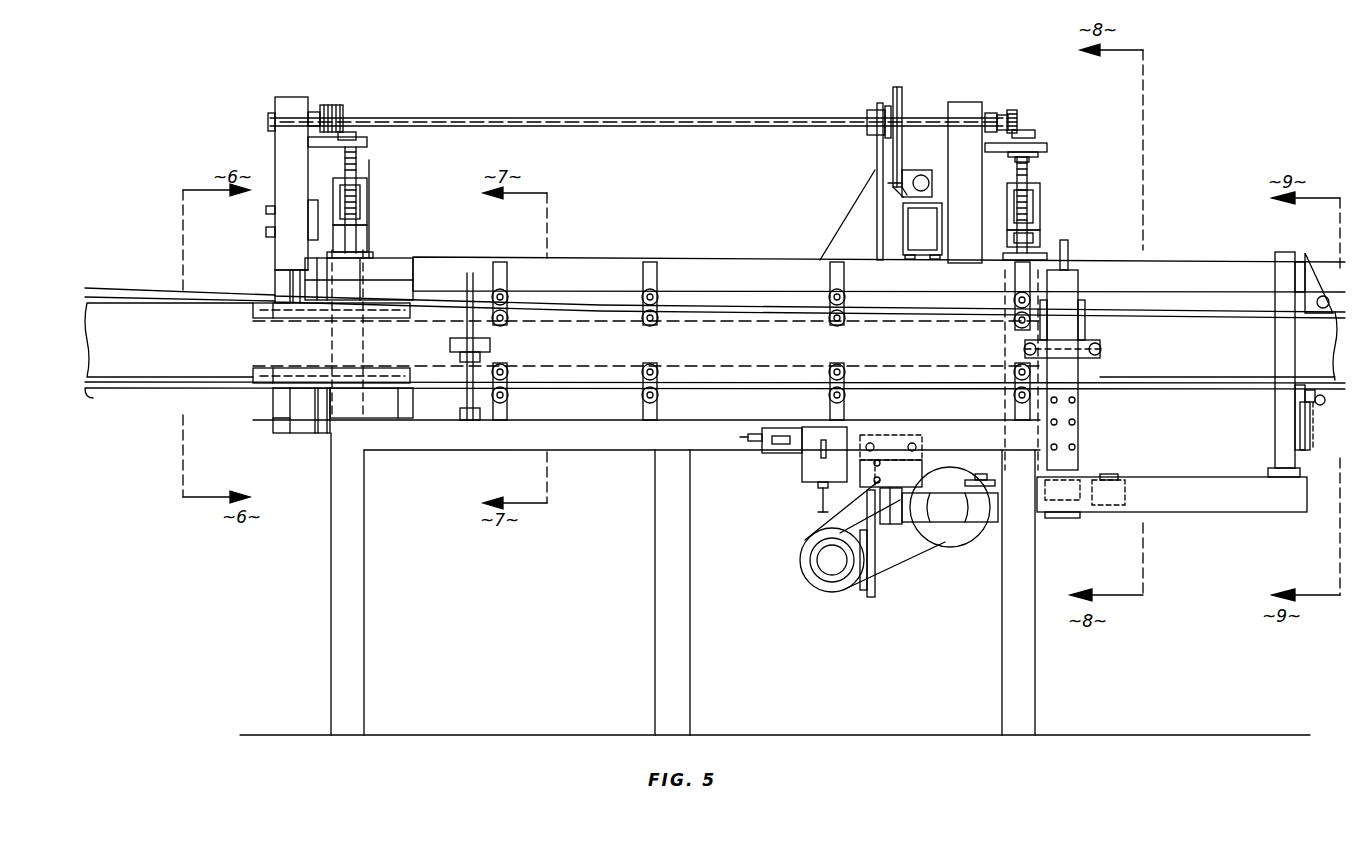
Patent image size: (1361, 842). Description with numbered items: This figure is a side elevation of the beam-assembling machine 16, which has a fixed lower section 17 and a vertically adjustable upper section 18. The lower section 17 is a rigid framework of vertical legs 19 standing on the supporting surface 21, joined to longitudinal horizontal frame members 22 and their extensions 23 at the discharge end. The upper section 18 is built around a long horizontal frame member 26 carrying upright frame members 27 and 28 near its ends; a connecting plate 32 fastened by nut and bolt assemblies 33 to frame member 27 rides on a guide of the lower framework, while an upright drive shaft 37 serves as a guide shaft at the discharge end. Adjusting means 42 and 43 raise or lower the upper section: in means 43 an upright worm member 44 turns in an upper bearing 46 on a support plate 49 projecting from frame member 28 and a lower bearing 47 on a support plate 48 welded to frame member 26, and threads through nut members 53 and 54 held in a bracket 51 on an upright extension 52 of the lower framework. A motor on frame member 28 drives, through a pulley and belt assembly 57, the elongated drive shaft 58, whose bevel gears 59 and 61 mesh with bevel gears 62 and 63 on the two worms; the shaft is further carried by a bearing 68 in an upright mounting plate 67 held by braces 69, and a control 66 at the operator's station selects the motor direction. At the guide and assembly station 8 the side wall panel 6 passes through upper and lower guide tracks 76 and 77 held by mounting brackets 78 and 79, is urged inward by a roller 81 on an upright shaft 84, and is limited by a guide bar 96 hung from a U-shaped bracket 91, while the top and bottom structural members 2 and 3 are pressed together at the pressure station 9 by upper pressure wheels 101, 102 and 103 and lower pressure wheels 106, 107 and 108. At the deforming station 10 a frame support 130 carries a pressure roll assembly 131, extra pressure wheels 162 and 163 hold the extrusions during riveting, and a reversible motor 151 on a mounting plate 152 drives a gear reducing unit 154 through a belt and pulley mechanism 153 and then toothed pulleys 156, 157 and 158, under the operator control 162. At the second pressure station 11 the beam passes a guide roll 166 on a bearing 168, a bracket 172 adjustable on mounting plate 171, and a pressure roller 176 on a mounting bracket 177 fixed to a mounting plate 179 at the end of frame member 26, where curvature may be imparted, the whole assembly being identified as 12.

The top structural member 2 is at (140, 290).
The bottom structural member 3 is at (105, 390).
The side wall panel 6 is at (711, 341).
The guide and assembly station 8 is at (305, 445).
The pressure station 9 is at (668, 255).
The deforming station 10 is at (1140, 250).
The second pressure station 11 is at (1291, 225).
The discharge end post assembly 12 is at (1339, 179).
The machine 16 is at (168, 476).
The lower section 17 is at (331, 530).
The upper section 18 is at (295, 66).
The legs 19 is at (364, 604).
The supporting surface 21 is at (498, 734).
The horizontal frame members 22 is at (600, 450).
The horizontal frame member extensions 23 is at (1172, 477).
The horizontal frame member 26 is at (620, 243).
The vertical frame member 27 is at (300, 97).
The vertical frame member 28 is at (960, 102).
The connecting plate 32 is at (268, 240).
The nut and bolt assemblies 33 is at (266, 210).
The drive shaft 37 is at (1075, 276).
The adjusting means 42 is at (370, 193).
The adjusting means 43 is at (1045, 180).
The worm member 44 is at (1030, 170).
The upper bearing 46 is at (1038, 152).
The lower bearing 47 is at (1068, 248).
The support plate 48 is at (1010, 300).
The support plate 49 is at (1030, 159).
The bracket 51 is at (1040, 212).
The upright extension 52 is at (1003, 250).
The nut member 53 is at (1040, 193).
The nut member 54 is at (1040, 232).
The pulley and belt assembly 57 is at (900, 87).
The drive shaft 58 is at (822, 118).
The bevel gear 59 is at (338, 105).
The bevel gear 61 is at (1005, 115).
The bevel gear 62 is at (358, 134).
The bevel gear 63 is at (1020, 130).
The control 66 is at (782, 453).
The upright mounting plate 67 is at (877, 157).
The bearing 68 is at (880, 106).
The braces 69 is at (842, 222).
The upper guide tracks 76 is at (258, 314).
The lower guide tracks 77 is at (265, 368).
The mounting brackets 78 is at (320, 272).
The mounting brackets 79 is at (325, 410).
The roller 81 is at (492, 345).
The upright supporting shaft 84 is at (466, 330).
The U-shaped bracket 91 is at (604, 322).
The guide bar 96 is at (598, 382).
The pressure wheels 101 is at (507, 275).
The pressure wheels 102 is at (663, 278).
The pressure wheels 103 is at (830, 305).
The pressure wheels 106 is at (510, 380).
The pressure wheels 107 is at (660, 380).
The pressure wheels 108 is at (845, 372).
The upright frame support 130 is at (1085, 366).
The pressure roll assembly 131 is at (1095, 342).
The electric motor 151 is at (815, 578).
The mounting plate 152 is at (868, 598).
The belt and pulley mechanism 153 is at (935, 546).
The gear reducing unit 154 is at (985, 525).
The toothed pulley 156 is at (975, 480).
The toothed pulley 157 is at (1065, 500).
The toothed pulley 158 is at (1112, 474).
The operator control 162 is at (1013, 325).
The pressure wheels 163 is at (1013, 398).
The guide roll 166 is at (1275, 335).
The bearing 168 is at (1270, 464).
The mounting plate 171 is at (1300, 428).
The guide roll mounting bracket 172 is at (1305, 398).
The pressure roller 176 is at (1320, 318).
The mounting bracket 177 is at (1300, 282).
The mounting plate 179 is at (1297, 262).